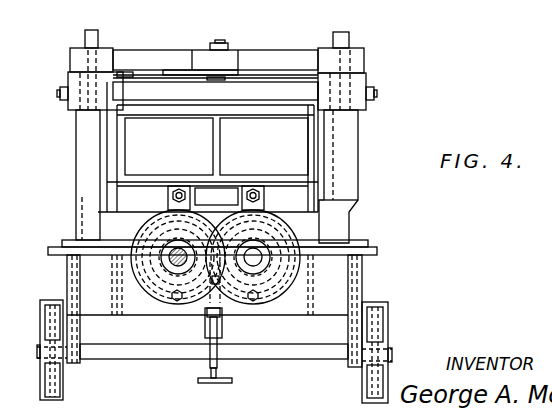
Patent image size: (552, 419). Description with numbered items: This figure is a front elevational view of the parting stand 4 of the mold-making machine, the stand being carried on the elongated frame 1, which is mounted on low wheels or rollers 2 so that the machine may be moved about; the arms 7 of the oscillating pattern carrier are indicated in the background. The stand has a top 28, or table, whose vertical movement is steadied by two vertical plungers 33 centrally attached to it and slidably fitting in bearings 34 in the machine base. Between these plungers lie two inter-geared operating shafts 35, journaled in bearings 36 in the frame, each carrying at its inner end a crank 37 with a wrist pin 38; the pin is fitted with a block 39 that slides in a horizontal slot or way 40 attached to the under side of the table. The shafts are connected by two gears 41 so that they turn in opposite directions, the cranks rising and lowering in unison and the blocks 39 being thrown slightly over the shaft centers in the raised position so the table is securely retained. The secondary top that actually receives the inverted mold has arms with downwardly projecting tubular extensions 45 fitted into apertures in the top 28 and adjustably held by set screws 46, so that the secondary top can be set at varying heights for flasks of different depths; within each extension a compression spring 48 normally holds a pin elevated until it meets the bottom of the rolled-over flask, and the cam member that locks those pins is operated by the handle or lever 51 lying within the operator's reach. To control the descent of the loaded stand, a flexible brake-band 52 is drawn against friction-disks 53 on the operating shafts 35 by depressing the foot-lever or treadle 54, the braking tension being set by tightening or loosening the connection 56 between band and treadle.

The frame 1 is at (82, 362).
The wheels or rollers 2 is at (40, 312).
The parting stand 4 is at (18, 148).
The arms 7 is at (133, 236).
The top 28 is at (143, 108).
The vertical plungers 33 is at (82, 213).
The bearings 34 is at (75, 277).
The operating shafts 35 is at (190, 283).
The bearings 36 is at (176, 262).
The crank 37 is at (290, 225).
The wrist pin 38 is at (184, 189).
The block 39 is at (168, 192).
The slot or way 40 is at (135, 212).
The gears 41 is at (130, 287).
The downwardly projecting extension 45 is at (360, 143).
The set screws 46 is at (57, 93).
The compression spring 48 is at (85, 36).
The handle or operating lever 51 is at (215, 51).
The brake-band 52 is at (177, 300).
The friction-disks 53 is at (197, 283).
The foot-lever or treadle 54 is at (208, 383).
The connection 56 is at (225, 314).